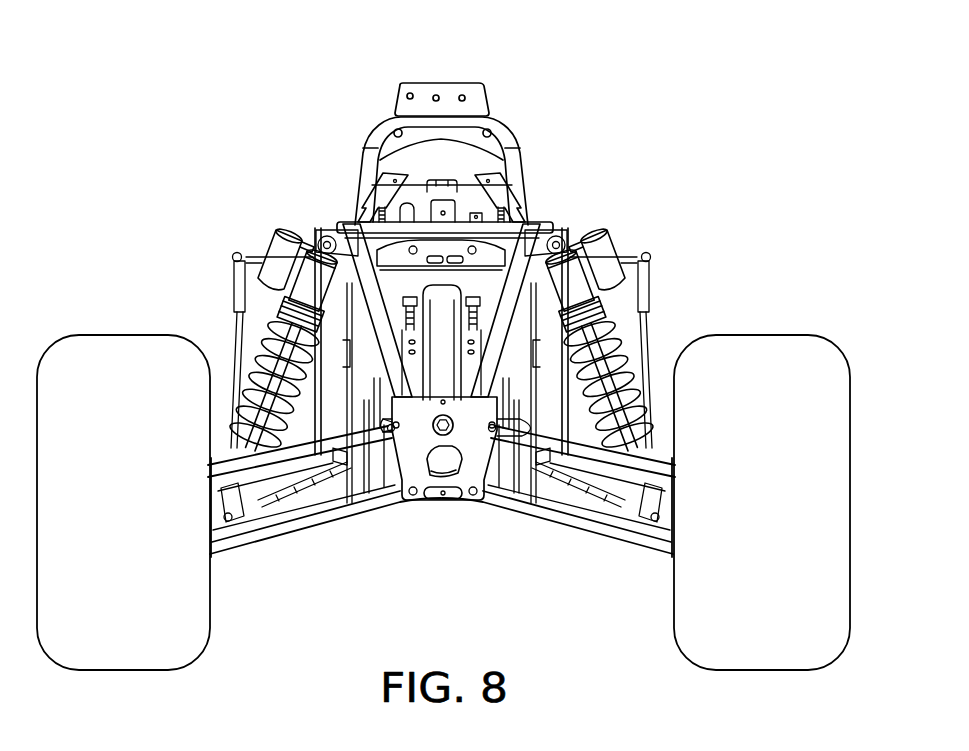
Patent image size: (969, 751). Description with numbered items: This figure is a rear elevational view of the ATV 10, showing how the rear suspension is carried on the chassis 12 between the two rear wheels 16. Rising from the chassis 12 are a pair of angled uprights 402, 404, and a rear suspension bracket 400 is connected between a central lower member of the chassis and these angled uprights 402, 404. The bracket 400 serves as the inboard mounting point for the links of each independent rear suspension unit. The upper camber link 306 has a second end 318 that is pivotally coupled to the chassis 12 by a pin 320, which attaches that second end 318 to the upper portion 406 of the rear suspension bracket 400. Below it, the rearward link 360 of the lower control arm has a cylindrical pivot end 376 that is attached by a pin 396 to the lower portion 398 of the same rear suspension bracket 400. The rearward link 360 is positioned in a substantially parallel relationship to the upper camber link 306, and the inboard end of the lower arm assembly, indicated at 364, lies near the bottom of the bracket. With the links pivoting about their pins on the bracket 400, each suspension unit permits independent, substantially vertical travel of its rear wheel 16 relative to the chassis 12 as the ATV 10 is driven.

The ATV 10 is at (580, 96).
The chassis 12 is at (444, 318).
The rear wheels 16 is at (127, 657).
The upper camber link 306 is at (268, 466).
The second end 318 is at (252, 411).
The pin 320 is at (348, 414).
The rearward link 360 is at (296, 541).
The arm bracket 364 is at (394, 526).
The cylindrical pivot end 376 is at (363, 508).
The pin 396 is at (413, 497).
The lower portion 398 is at (449, 482).
The rear suspension bracket 400 is at (512, 428).
The angled upright 402 is at (505, 258).
The angled upright 404 is at (353, 221).
The upper portion 406 is at (453, 401).